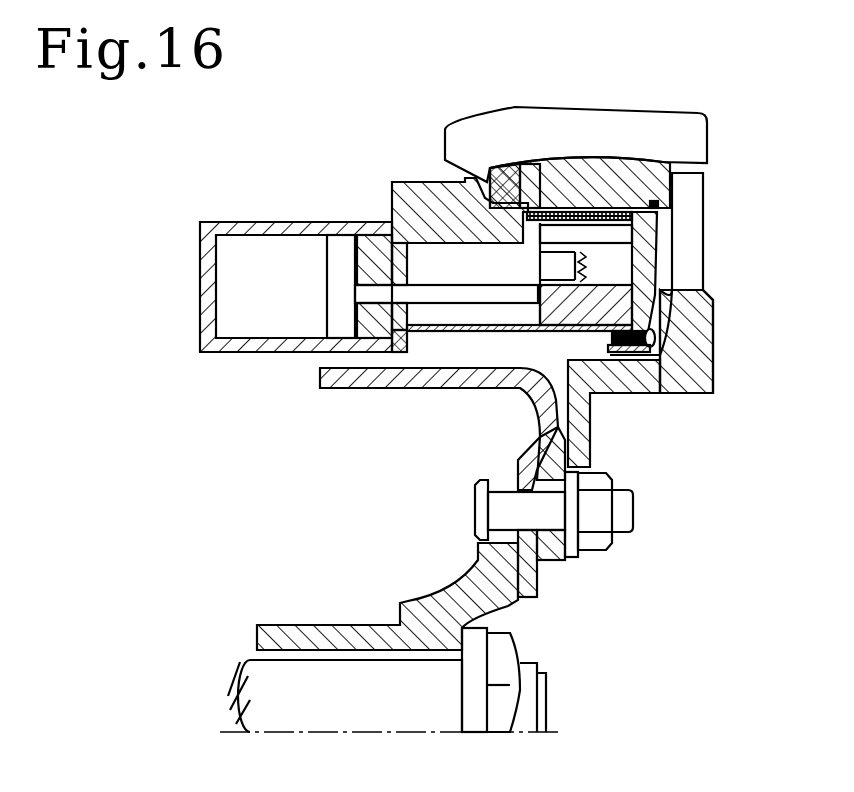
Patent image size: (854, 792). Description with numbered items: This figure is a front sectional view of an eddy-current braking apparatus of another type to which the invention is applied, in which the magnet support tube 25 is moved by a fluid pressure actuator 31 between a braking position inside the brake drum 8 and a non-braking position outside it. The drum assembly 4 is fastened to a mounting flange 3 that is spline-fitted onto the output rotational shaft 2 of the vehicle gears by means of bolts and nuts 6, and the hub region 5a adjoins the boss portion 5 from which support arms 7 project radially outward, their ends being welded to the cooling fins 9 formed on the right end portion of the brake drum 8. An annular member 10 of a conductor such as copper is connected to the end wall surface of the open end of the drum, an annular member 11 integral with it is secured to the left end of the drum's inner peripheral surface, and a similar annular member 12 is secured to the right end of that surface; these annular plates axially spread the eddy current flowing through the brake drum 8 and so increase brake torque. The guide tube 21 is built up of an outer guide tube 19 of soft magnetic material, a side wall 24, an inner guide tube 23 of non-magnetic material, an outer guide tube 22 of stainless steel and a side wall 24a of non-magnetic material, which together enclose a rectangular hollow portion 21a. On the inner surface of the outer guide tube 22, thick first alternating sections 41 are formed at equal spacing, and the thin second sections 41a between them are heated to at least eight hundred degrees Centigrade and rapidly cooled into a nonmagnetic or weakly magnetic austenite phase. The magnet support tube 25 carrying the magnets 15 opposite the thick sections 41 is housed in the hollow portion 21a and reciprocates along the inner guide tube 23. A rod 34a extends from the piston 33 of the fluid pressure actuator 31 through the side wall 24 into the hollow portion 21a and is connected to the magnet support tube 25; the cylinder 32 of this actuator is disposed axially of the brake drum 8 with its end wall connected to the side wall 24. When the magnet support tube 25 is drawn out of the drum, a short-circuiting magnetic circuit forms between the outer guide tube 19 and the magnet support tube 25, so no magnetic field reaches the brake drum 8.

The output rotational shaft 2 is at (380, 723).
The mounting flange 3 is at (433, 610).
The brake drum (boss portion fastening) 4 is at (388, 389).
The boss portion 5 is at (637, 385).
The bracket hub 5a is at (552, 555).
The bolts and nuts 6 is at (482, 515).
The support arms 7 is at (692, 223).
The brake drum 8 is at (603, 188).
The cooling fins 9 is at (658, 130).
The annular member 10 is at (510, 172).
The annular member 11 is at (533, 186).
The annular member 12 is at (654, 201).
The magnets 15 is at (552, 268).
The outer guide tube 19 is at (415, 184).
The guide tube 21 is at (391, 181).
The hollow portion 21a is at (448, 313).
The outer guide tube 22 is at (588, 208).
The inner guide tube 23 is at (512, 313).
The side wall 24 is at (396, 267).
The side wall 24a is at (652, 263).
The magnet support tube 25 is at (604, 313).
The fluid pressure actuator 31 is at (237, 220).
The cylinder 32 is at (280, 228).
The piston 33 is at (333, 300).
The rod 34a is at (448, 298).
The thick first alternating sections 41 is at (573, 230).
The thin second sections 41a is at (550, 210).